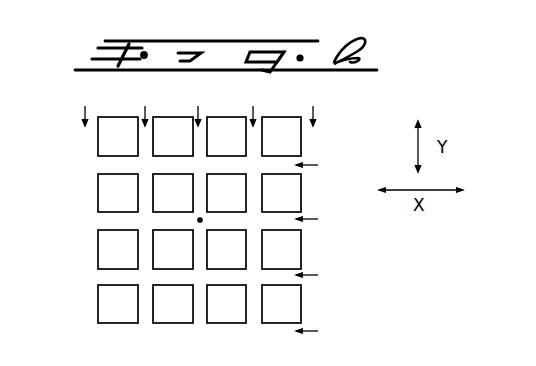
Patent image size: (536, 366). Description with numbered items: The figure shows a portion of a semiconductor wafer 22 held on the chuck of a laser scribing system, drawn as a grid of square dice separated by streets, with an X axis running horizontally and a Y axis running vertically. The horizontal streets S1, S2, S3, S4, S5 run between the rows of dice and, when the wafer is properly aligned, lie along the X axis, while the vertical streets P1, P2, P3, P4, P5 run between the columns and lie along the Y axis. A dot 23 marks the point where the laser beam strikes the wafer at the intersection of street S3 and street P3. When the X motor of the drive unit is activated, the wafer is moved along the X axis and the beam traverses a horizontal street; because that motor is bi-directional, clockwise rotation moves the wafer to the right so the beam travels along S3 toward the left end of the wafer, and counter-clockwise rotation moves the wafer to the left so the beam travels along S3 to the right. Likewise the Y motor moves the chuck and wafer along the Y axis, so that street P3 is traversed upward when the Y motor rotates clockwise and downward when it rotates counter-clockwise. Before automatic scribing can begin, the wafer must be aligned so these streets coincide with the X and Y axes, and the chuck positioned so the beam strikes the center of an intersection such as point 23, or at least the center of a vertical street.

The wafer 22 is at (100, 196).
The point 23 is at (200, 220).
The vertical street P1 is at (87, 105).
The vertical street P2 is at (145, 105).
The vertical street P3 is at (200, 105).
The vertical street P4 is at (255, 105).
The vertical street P5 is at (306, 105).
The horizontal street S1 is at (225, 112).
The horizontal street S2 is at (323, 165).
The horizontal street S3 is at (323, 219).
The horizontal street S4 is at (323, 275).
The horizontal street S5 is at (322, 331).